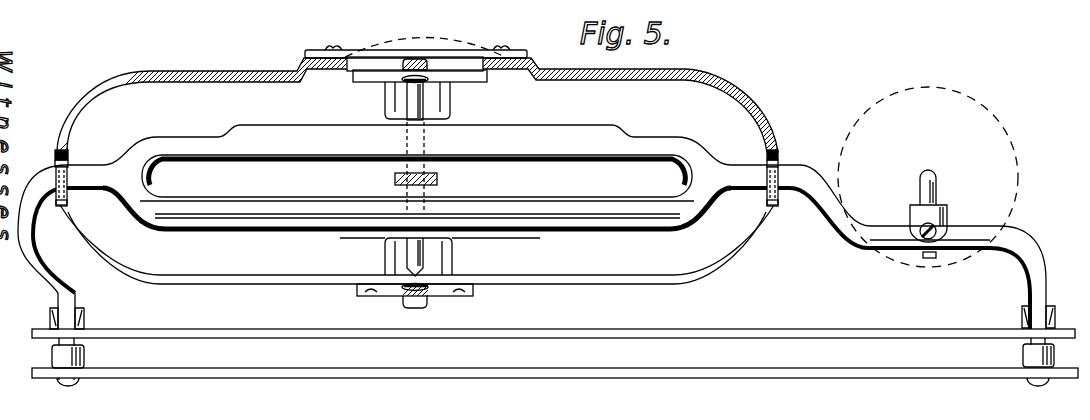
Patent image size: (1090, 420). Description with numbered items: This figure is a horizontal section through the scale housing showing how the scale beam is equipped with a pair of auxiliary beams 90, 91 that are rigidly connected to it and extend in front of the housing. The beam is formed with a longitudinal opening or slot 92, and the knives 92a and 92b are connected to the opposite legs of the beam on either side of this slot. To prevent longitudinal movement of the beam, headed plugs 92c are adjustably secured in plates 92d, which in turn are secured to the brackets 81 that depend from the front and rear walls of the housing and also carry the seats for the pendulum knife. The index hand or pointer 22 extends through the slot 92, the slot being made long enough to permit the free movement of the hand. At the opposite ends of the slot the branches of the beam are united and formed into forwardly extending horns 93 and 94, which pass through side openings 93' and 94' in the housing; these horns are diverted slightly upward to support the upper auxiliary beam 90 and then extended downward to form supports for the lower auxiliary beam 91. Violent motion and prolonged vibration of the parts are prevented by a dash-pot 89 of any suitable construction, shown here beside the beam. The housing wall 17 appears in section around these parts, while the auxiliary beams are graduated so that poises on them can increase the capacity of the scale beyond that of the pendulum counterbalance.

The frame 17 is at (760, 108).
The index hand or pointer 22 is at (438, 179).
The brackets 81 is at (414, 71).
The dash-pot 89 is at (892, 87).
The upper auxiliary beam 90 is at (711, 370).
The lower auxiliary beam 91 is at (715, 330).
The longitudinal opening or slot 92 is at (654, 163).
The knife 92a is at (448, 103).
The knife 92b is at (452, 244).
The headed plugs 92c is at (404, 82).
The plates 92d is at (438, 58).
The horn 93 is at (53, 275).
The side opening 93' is at (48, 144).
The horn 94 is at (897, 275).
The side opening 94' is at (800, 167).